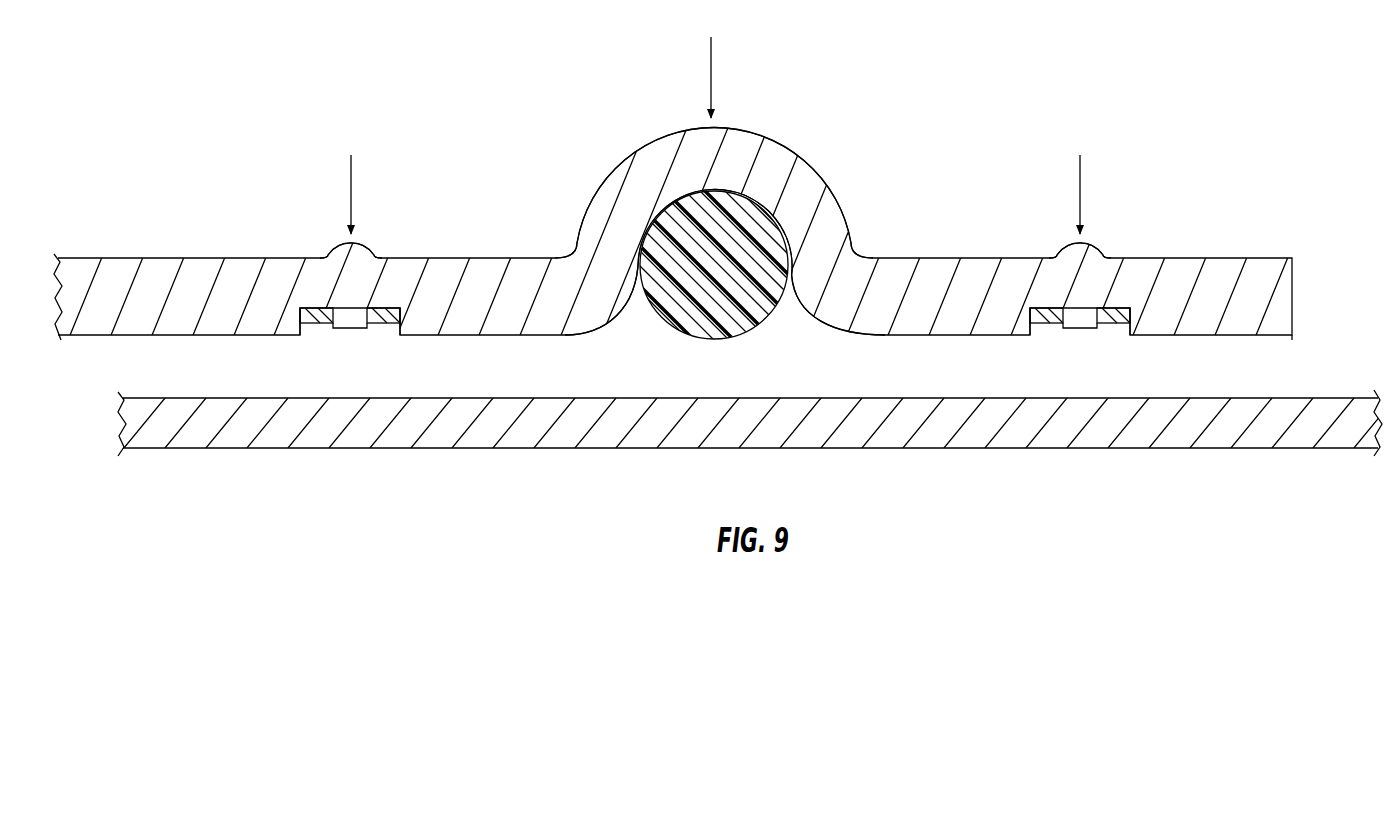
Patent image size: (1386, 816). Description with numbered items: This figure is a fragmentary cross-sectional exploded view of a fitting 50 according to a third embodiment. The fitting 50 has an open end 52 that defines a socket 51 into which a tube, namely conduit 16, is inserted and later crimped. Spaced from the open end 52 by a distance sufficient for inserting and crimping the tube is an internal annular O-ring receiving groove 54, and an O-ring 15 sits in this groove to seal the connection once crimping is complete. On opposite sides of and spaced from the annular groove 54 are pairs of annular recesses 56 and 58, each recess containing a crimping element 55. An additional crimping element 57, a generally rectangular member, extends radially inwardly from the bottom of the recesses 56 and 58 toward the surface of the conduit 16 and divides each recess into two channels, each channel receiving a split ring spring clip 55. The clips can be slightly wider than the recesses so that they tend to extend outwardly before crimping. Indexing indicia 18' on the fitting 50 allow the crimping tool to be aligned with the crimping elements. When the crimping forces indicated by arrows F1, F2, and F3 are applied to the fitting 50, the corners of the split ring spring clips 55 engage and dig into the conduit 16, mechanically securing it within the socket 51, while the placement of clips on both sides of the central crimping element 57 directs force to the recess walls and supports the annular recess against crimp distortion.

The O-ring 15 is at (733, 232).
The conduit 16 is at (858, 448).
The indexing indicia 18' is at (730, 231).
The fitting 50 is at (846, 124).
The socket 51 is at (1284, 356).
The open end 52 is at (1307, 368).
The annular O-ring receiving groove 54 is at (787, 248).
The split ring spring clip 55 is at (313, 306).
The annular recess 56 is at (306, 338).
The crimping element 57 is at (350, 330).
The annular recess 58 is at (395, 338).
The crimping force arrow F1 is at (351, 193).
The crimping force arrow F2 is at (712, 77).
The crimping force arrow F3 is at (1080, 193).